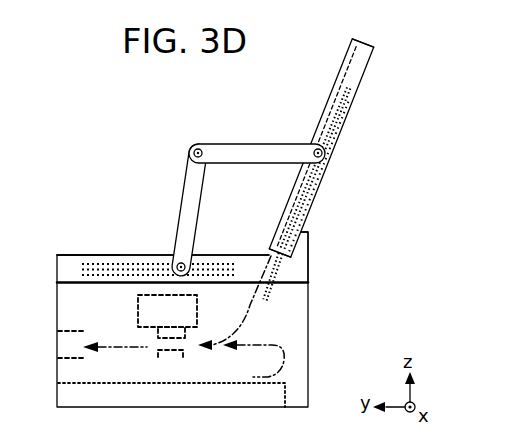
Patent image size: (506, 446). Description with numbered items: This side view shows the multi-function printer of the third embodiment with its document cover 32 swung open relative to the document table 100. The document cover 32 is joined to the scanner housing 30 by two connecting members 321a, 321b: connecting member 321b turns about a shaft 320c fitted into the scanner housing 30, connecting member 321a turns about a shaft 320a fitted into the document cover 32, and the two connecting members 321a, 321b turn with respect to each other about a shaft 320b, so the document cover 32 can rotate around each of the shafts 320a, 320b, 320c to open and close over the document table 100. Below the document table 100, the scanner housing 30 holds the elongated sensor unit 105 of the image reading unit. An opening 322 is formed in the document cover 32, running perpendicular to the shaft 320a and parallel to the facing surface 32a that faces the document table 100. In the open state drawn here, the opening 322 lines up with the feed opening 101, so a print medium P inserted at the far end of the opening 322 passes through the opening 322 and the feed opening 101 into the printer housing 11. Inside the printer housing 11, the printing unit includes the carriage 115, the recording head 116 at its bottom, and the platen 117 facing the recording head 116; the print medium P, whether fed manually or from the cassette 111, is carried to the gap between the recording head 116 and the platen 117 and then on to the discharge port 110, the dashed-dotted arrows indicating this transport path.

The printer housing 11 is at (299, 338).
The scanner housing 30 is at (299, 263).
The document cover 32 is at (346, 117).
The facing surface 32a is at (332, 92).
The opening 322 is at (370, 44).
The shaft 320a is at (315, 151).
The shaft 320b is at (193, 148).
The shaft 320c is at (176, 262).
The connecting member 321a is at (246, 152).
The connecting member 321b is at (190, 200).
The document table 100 is at (88, 257).
The feed opening 101 is at (270, 254).
The sensor unit 105 is at (82, 270).
The discharge port 110 is at (58, 352).
The cassette 111 is at (95, 393).
The carriage 115 is at (138, 308).
The recording head 116 is at (157, 334).
The platen 117 is at (160, 352).
The print medium P is at (262, 293).